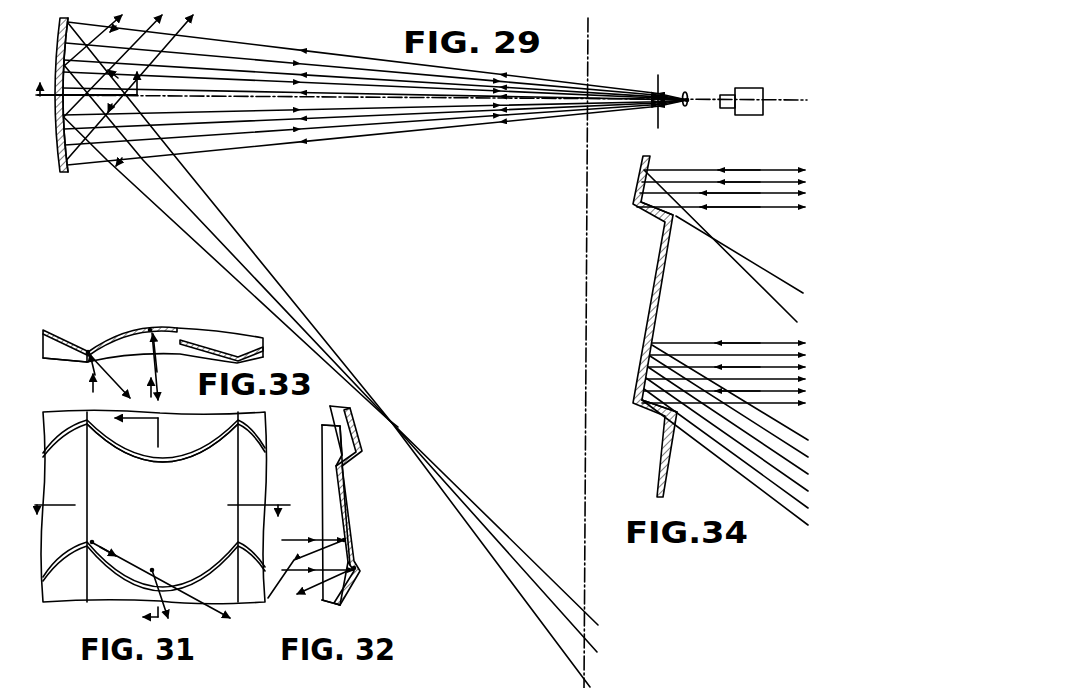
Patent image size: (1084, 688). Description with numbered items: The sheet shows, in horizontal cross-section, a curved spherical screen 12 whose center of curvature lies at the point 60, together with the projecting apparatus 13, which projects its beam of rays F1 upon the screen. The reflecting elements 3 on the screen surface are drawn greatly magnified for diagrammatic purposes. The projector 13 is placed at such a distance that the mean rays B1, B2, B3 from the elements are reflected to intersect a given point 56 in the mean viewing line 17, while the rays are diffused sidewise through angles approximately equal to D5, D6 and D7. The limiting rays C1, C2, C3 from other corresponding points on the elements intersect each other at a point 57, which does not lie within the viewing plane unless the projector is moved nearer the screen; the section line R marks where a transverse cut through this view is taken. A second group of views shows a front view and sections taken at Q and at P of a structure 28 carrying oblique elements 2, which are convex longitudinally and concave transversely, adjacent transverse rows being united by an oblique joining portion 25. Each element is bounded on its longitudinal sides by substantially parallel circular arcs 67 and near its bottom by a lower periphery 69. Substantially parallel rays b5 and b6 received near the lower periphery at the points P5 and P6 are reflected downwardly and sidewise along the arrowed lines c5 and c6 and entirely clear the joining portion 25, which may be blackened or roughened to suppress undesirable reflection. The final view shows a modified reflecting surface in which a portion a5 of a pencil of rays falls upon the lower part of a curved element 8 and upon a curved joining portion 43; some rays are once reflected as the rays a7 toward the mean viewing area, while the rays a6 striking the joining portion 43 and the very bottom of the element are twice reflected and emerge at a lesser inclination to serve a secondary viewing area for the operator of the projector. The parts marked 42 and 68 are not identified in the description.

In FIG. 33, the oblique element 2 is at (162, 343).
In FIG. 31, the oblique element 2 is at (154, 507).
In FIG. 32, the oblique element 2 is at (324, 481).
In FIG. 29, the element 3 is at (75, 33).
In FIG. 34, the curved element 8 is at (652, 162).
In FIG. 29, the curved spherical screen 12 is at (68, 172).
In FIG. 29, the projecting apparatus 13 is at (748, 93).
In FIG. 29, the mean viewing line 17 is at (592, 73).
In FIG. 33, the oblique joining portion 25 is at (122, 347).
In FIG. 31, the oblique joining portion 25 is at (152, 455).
In FIG. 32, the oblique joining portion 25 is at (340, 440).
In FIG. 33, the structure 28 is at (197, 327).
In FIG. 32, the structure 28 is at (352, 530).
In FIG. 34, the reflector portion 42 is at (662, 275).
In FIG. 34, the curved joining portion 43 is at (672, 212).
In FIG. 29, the given point 56 is at (605, 88).
In FIG. 29, the intersection point 57 is at (394, 423).
In FIG. 29, the center of curvature 60 is at (682, 92).
In FIG. 31, the circular arc 67 is at (88, 484).
In FIG. 32, the circular arc 67 is at (325, 498).
In FIG. 31, the arc groove 68 is at (185, 462).
In FIG. 32, the arc groove 68 is at (324, 446).
In FIG. 31, the lower periphery 69 is at (202, 446).
In FIG. 29, the mean ray B1 is at (423, 100).
In FIG. 29, the mean ray B2 is at (453, 110).
In FIG. 29, the mean ray B3 is at (395, 80).
In FIG. 29, the limiting ray C1 is at (466, 494).
In FIG. 29, the limiting ray C2 is at (498, 520).
In FIG. 29, the limiting ray C3 is at (506, 560).
In FIG. 29, the sidewise diffusion angle D5 is at (98, 40).
In FIG. 29, the sidewise diffusion angle D6 is at (113, 66).
In FIG. 29, the sidewise diffusion angle D7 is at (130, 90).
In FIG. 29, the beam of rays F1 is at (685, 103).
In FIG. 29, the section line R is at (85, 74).
In FIG. 34, the incident rays a5 is at (785, 208).
In FIG. 34, the twice-reflected rays a6 is at (748, 210).
In FIG. 34, the once-reflected rays a7 is at (800, 293).
In FIG. 31, the section line P is at (159, 521).
In FIG. 31, the section line Q is at (128, 519).
In FIG. 33, the point P5 is at (89, 352).
In FIG. 31, the point P5 is at (93, 541).
In FIG. 32, the point P5 is at (347, 541).
In FIG. 33, the point P6 is at (150, 330).
In FIG. 31, the point P6 is at (152, 569).
In FIG. 32, the point P6 is at (357, 568).
In FIG. 33, the parallel incident ray b5 is at (81, 369).
In FIG. 32, the parallel incident ray b5 is at (308, 550).
In FIG. 33, the parallel incident ray b6 is at (142, 357).
In FIG. 32, the parallel incident ray b6 is at (313, 579).
In FIG. 33, the reflected ray c5 is at (109, 377).
In FIG. 31, the reflected ray c5 is at (176, 587).
In FIG. 32, the reflected ray c5 is at (306, 579).
In FIG. 33, the reflected ray c6 is at (168, 368).
In FIG. 31, the reflected ray c6 is at (173, 601).
In FIG. 32, the reflected ray c6 is at (325, 598).